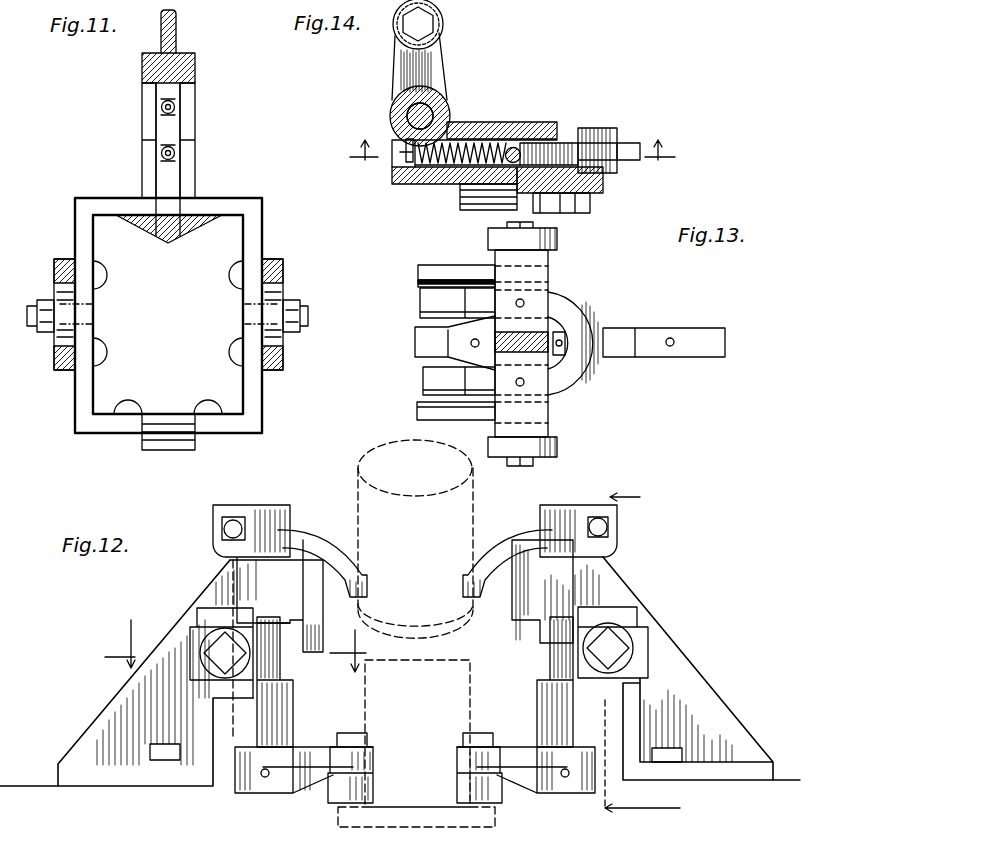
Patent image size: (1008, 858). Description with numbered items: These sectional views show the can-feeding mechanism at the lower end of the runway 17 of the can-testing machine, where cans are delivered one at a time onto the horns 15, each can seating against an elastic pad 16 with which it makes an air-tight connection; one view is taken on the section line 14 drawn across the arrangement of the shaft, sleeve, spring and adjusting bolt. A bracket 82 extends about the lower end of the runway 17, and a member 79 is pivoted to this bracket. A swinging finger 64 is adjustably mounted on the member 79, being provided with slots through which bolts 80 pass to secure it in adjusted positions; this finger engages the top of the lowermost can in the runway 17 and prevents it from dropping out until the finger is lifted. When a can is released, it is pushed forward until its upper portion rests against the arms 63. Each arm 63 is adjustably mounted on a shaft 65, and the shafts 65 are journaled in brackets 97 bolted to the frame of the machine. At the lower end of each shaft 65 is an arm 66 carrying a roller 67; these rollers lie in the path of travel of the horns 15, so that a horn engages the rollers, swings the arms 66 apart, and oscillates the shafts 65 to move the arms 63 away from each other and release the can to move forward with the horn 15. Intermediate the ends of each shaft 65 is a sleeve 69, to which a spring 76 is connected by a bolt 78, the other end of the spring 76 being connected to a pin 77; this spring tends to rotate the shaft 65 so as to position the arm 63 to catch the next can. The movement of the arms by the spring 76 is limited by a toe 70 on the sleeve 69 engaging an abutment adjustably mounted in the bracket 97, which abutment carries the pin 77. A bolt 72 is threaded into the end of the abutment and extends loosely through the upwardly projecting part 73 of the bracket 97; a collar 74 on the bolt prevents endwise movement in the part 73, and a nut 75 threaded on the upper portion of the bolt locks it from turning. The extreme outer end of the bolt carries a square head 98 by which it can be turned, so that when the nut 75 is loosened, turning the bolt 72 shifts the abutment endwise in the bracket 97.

In FIG. 12, the section line 14- 14 is at (232, 646).
In FIG. 14, the horn 15 is at (510, 152).
In FIG. 12, the horn 15 is at (380, 445).
In FIG. 12, the elastic pad 16 is at (470, 600).
In FIG. 11, the runway 17 is at (240, 345).
In FIG. 12, the arms 63 is at (352, 565).
In FIG. 11, the swinging finger 64 is at (172, 197).
In FIG. 13, the swinging finger 64 is at (560, 368).
In FIG. 14, the shaft 65 is at (395, 117).
In FIG. 12, the shaft 65 is at (262, 505).
In FIG. 14, the arm 66 is at (398, 75).
In FIG. 12, the arm 66 is at (300, 780).
In FIG. 14, the roller 67 is at (443, 22).
In FIG. 12, the roller 67 is at (350, 795).
In FIG. 14, the sleeve 69 is at (430, 110).
In FIG. 14, the toe 70 is at (415, 186).
In FIG. 14, the bolt 72 is at (560, 140).
In FIG. 12, the bolt 72 is at (215, 665).
In FIG. 14, the upwardly projecting part 73 is at (600, 187).
In FIG. 12, the upwardly projecting part 73 is at (237, 628).
In FIG. 14, the collar 74 is at (570, 190).
In FIG. 14, the nut 75 is at (604, 128).
In FIG. 12, the nut 75 is at (205, 690).
In FIG. 14, the spring 76 is at (465, 210).
In FIG. 14, the pin 77 is at (514, 147).
In FIG. 14, the bolt 78 is at (404, 150).
In FIG. 11, the member 79 is at (196, 121).
In FIG. 13, the member 79 is at (553, 313).
In FIG. 11, the bolts 80 is at (170, 140).
In FIG. 11, the bracket 82 is at (262, 223).
In FIG. 13, the bracket 82 is at (455, 343).
In FIG. 14, the bracket 97 is at (540, 122).
In FIG. 12, the bracket 97 is at (228, 585).
In FIG. 14, the square head 98 is at (638, 142).